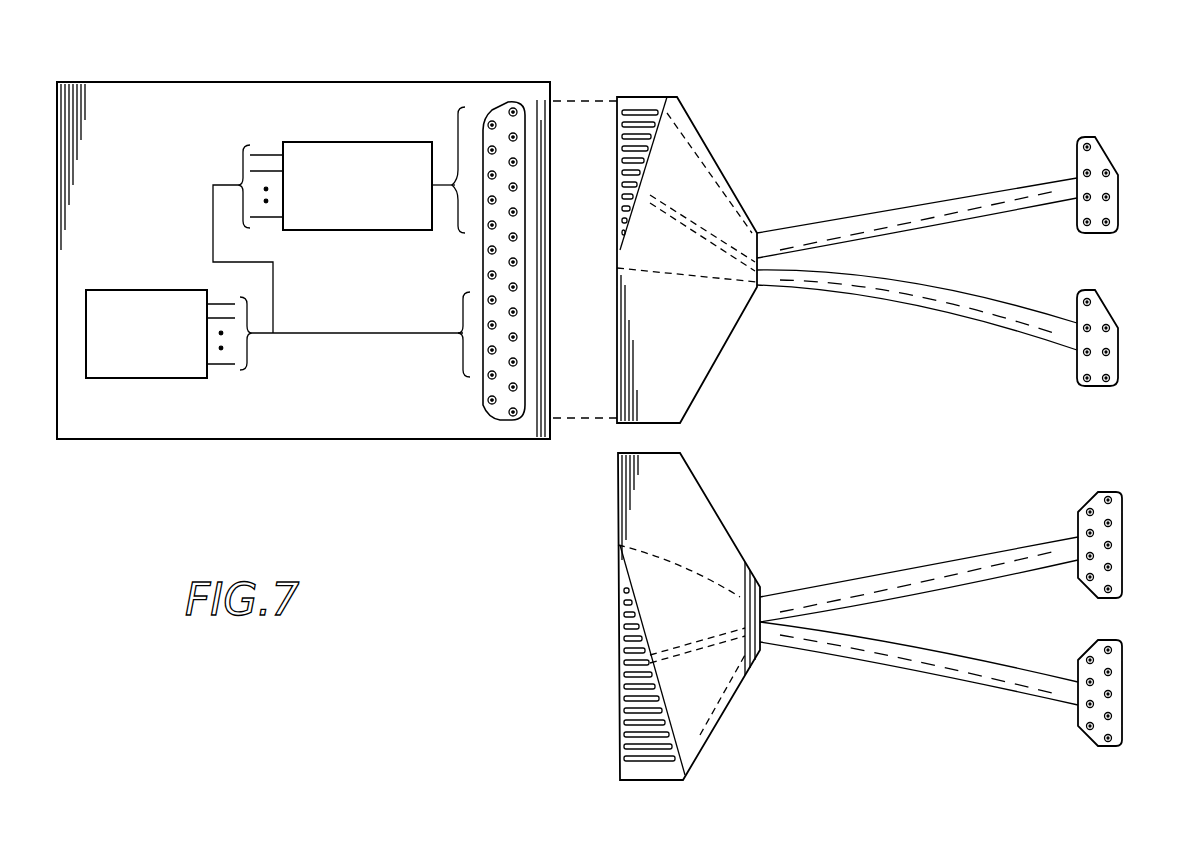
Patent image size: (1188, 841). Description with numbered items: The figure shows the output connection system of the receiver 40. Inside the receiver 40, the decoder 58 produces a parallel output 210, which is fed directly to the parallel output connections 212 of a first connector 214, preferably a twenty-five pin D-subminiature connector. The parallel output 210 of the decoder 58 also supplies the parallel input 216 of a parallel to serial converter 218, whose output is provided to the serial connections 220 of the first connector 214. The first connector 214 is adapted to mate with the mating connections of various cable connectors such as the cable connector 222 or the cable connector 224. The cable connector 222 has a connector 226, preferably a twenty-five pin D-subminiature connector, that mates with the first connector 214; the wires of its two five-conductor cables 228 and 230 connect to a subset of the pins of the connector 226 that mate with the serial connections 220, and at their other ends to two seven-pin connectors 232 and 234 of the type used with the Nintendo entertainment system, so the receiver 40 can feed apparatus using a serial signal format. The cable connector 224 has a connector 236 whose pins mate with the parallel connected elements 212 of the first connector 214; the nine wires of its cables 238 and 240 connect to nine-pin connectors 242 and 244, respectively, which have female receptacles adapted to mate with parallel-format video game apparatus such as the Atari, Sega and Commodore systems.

The receiver 40 is at (356, 78).
The decoder 58 is at (140, 378).
The parallel output 210 is at (230, 365).
The parallel output connections 212 is at (462, 355).
The first connector 214 is at (490, 412).
The parallel input 216 is at (266, 152).
The parallel to serial converter 218 is at (375, 142).
The serial connections 220 is at (466, 108).
The cable connector 222 is at (890, 254).
The cable connector 224 is at (870, 611).
The connector 226 is at (680, 100).
The cable 228 is at (960, 200).
The cable 230 is at (990, 305).
The 7-pin connector 232 is at (1107, 158).
The 7-pin connector 234 is at (1087, 365).
The connector 236 is at (695, 475).
The cable 238 is at (985, 535).
The cable 240 is at (967, 676).
The 9-pin connector 242 is at (1096, 494).
The 9-pin connector 244 is at (1096, 648).